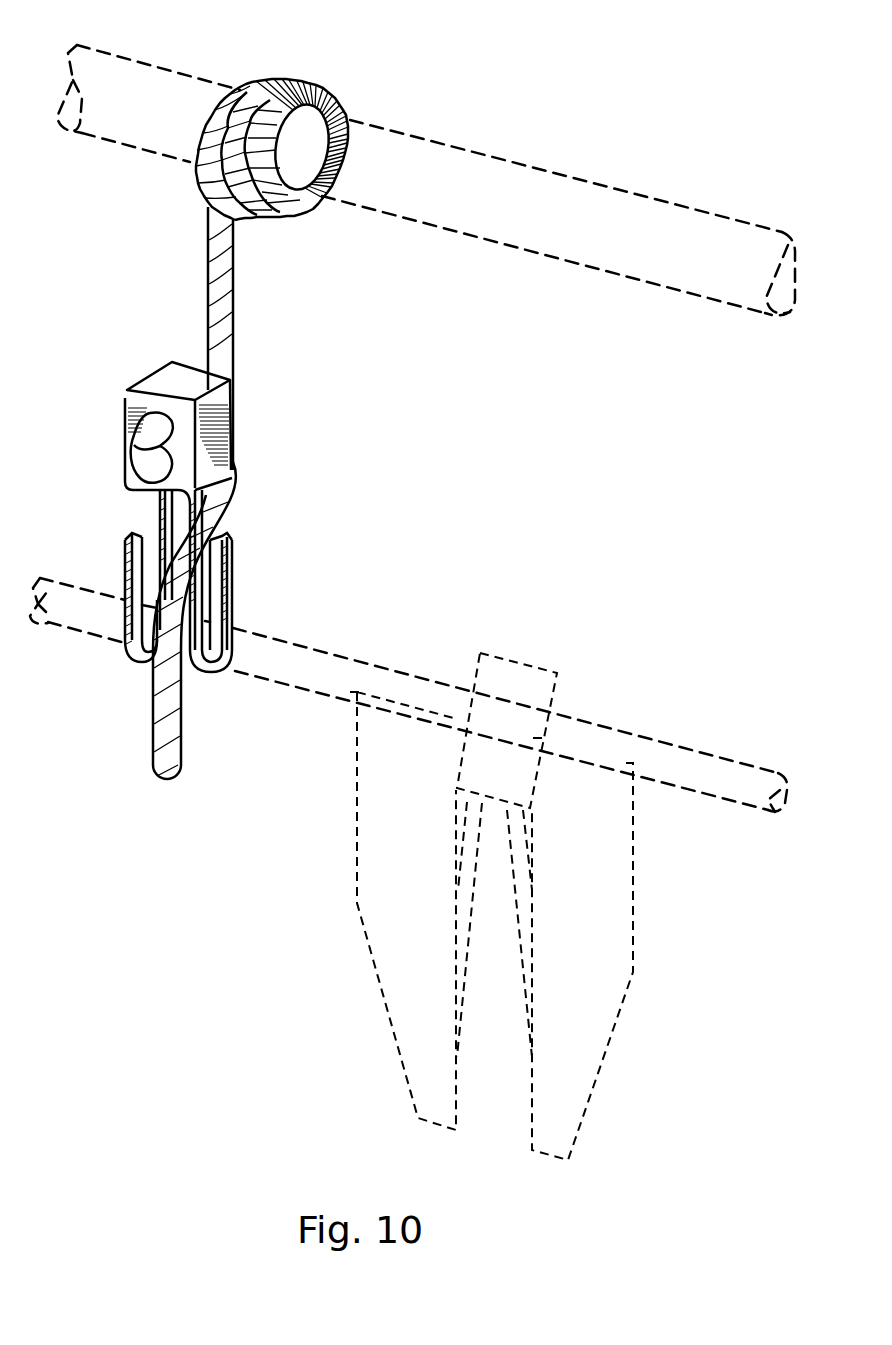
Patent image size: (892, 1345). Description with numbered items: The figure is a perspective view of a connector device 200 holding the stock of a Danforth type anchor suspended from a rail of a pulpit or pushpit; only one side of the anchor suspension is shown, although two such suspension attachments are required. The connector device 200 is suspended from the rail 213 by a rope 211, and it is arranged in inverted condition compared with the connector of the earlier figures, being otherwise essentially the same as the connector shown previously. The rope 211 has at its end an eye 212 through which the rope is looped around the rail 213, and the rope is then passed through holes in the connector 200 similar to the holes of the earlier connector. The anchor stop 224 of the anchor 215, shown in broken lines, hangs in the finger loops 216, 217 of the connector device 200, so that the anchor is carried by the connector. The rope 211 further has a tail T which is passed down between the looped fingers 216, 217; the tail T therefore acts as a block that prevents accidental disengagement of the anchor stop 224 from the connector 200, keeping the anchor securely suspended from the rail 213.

The connector device 200 is at (218, 441).
The rope 211 is at (237, 289).
The eye 212 is at (302, 80).
The rail 213 is at (610, 185).
The anchor 215 is at (636, 892).
The finger loop 216 is at (125, 582).
The finger loop 217 is at (234, 573).
The anchor stop 224 is at (287, 642).
The tail T is at (153, 770).